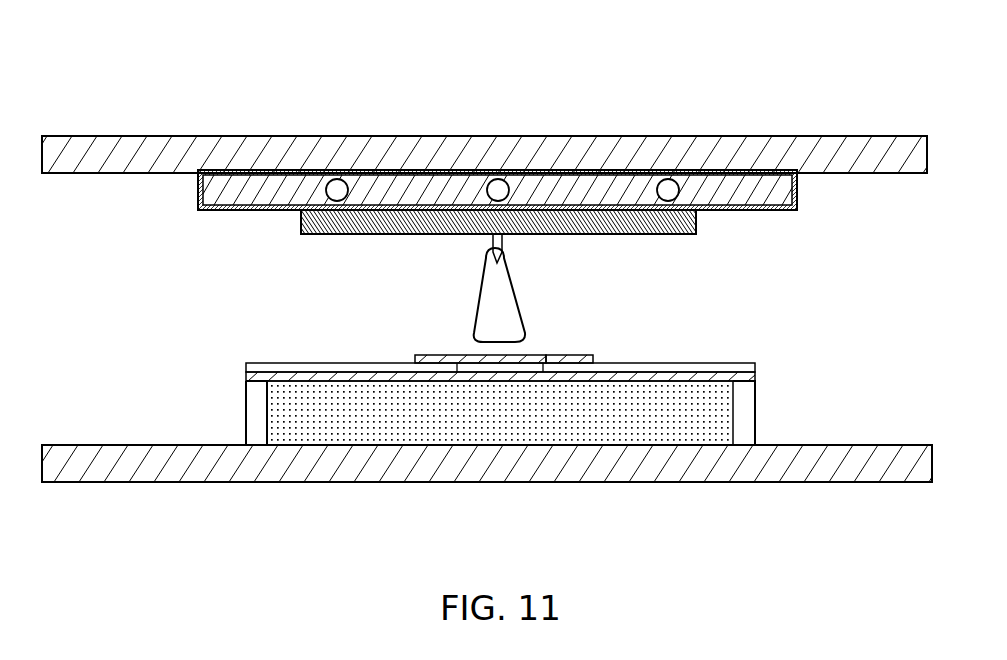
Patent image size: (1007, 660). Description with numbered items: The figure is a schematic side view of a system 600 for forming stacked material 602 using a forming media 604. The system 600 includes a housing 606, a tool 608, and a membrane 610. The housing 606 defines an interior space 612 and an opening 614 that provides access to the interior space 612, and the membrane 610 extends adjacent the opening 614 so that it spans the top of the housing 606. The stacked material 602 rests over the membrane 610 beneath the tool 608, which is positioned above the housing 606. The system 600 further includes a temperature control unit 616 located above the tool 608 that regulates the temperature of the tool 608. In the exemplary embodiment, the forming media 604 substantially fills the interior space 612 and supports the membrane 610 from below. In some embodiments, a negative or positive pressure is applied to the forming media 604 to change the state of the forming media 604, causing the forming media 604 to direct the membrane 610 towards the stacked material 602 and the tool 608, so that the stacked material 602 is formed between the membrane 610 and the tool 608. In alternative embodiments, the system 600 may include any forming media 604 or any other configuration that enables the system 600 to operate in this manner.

The system 600 is at (143, 65).
The stacked material 602 is at (443, 355).
The forming media 604 is at (330, 433).
The housing 606 is at (744, 433).
The tool 608 is at (515, 327).
The membrane 610 is at (377, 374).
The interior space 612 is at (440, 414).
The opening 614 is at (659, 363).
The temperature control unit 616 is at (267, 198).